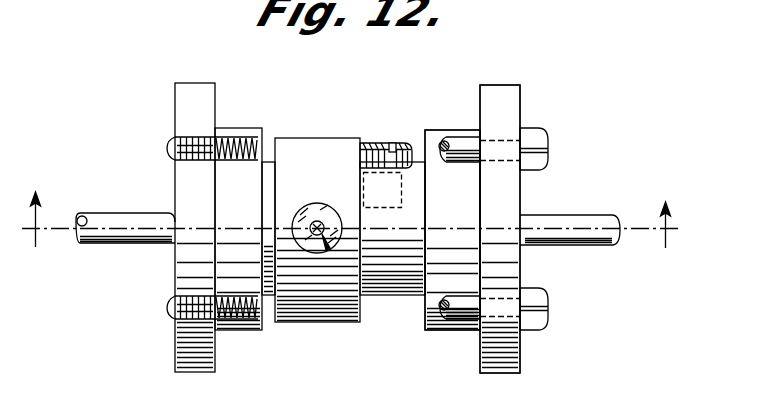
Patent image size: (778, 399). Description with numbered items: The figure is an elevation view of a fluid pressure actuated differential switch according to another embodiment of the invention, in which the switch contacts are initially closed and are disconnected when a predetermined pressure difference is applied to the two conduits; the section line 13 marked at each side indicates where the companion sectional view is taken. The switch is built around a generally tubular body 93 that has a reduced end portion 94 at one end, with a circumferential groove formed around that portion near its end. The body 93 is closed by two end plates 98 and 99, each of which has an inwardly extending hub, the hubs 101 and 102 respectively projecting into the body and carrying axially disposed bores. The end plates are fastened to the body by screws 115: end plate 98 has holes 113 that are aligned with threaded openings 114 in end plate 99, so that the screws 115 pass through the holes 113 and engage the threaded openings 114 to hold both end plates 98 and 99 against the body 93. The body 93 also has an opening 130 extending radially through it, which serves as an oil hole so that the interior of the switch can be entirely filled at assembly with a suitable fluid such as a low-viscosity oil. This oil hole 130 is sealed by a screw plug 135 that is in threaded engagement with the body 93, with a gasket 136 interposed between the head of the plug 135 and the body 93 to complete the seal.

The section line 13- 13 is at (353, 230).
The tubular body 93 is at (316, 137).
The reduced end portion 94 is at (388, 296).
The end plate 98 is at (517, 87).
The end plate 99 is at (175, 85).
The hub 101 is at (431, 331).
The hub 102 is at (260, 331).
The holes 113 is at (498, 135).
The threaded openings 114 is at (188, 137).
The screws 115 is at (549, 162).
The oil hole 130 is at (403, 193).
The screw plug 135 is at (390, 143).
The gasket 136 is at (383, 190).